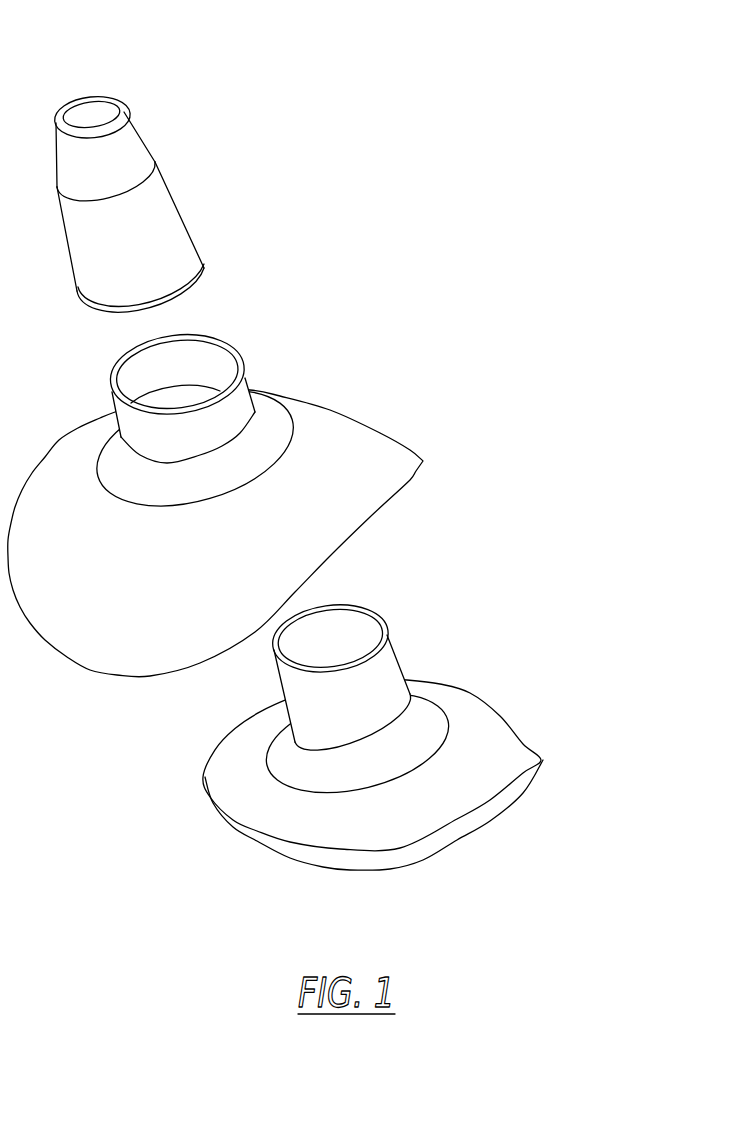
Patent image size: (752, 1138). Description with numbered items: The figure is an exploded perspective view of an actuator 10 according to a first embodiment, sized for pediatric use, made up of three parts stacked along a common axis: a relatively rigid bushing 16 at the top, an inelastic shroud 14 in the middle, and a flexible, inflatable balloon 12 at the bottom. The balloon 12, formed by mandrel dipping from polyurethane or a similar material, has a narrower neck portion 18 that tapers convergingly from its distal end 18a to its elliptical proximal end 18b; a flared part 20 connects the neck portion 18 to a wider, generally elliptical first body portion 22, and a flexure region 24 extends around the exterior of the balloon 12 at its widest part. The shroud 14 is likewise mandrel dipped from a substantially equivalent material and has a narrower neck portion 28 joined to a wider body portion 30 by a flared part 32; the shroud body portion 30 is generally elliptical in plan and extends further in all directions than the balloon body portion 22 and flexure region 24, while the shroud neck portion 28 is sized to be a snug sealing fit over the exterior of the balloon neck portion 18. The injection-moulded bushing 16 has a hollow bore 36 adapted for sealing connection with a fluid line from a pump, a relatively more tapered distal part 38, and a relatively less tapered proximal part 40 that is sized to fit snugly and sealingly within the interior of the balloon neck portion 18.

The actuator 10 is at (340, 477).
The balloon 12 is at (395, 761).
The shroud 14 is at (267, 493).
The bushing 16 is at (193, 159).
The neck portion 18 is at (324, 709).
The distal end 18a is at (358, 606).
The proximal end 18b is at (266, 758).
The flared part 20 is at (428, 722).
The first body portion 22 is at (508, 763).
The flexure region 24 is at (488, 822).
The neck portion 28 is at (252, 386).
The body portion 30 is at (367, 480).
The flared part 32 is at (267, 443).
The hollow bore 36 is at (92, 110).
The distal part 38 is at (137, 148).
The proximal part 40 is at (185, 258).